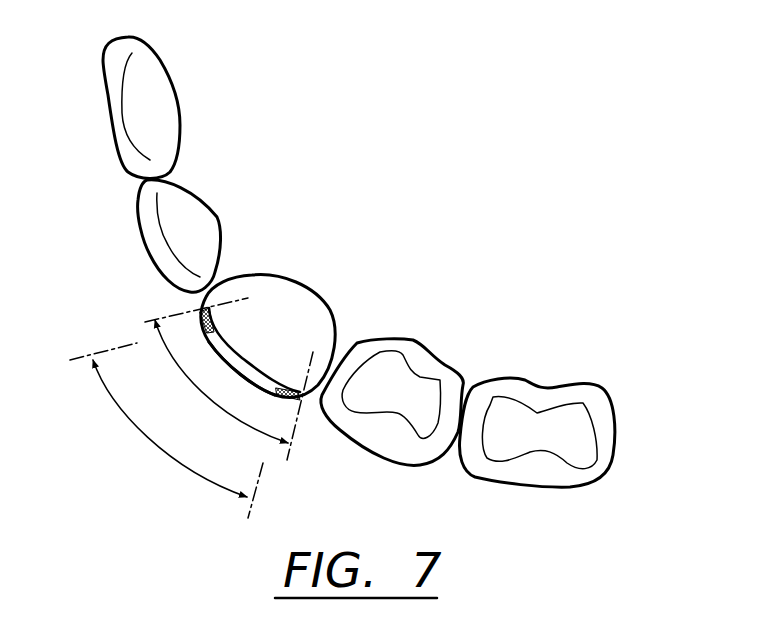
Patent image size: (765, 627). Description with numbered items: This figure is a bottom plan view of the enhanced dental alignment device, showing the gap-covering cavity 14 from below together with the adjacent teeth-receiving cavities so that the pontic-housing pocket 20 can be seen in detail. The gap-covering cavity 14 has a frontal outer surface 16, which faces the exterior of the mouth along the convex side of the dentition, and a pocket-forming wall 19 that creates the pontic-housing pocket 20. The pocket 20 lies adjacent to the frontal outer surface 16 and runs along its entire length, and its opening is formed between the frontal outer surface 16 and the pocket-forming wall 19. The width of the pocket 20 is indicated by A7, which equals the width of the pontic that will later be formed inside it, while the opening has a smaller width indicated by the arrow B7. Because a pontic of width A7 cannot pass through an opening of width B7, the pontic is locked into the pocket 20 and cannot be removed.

The gap-covering cavity 14 is at (288, 334).
The frontal outer surface 16 is at (258, 380).
The pocket-forming wall 19 is at (248, 362).
The pontic-housing pocket 20 is at (203, 343).
The pocket width A7 is at (200, 402).
The opening width B7 is at (150, 443).